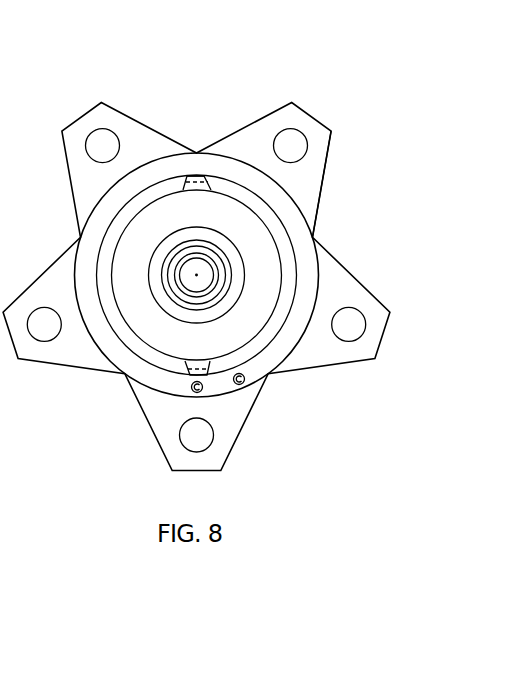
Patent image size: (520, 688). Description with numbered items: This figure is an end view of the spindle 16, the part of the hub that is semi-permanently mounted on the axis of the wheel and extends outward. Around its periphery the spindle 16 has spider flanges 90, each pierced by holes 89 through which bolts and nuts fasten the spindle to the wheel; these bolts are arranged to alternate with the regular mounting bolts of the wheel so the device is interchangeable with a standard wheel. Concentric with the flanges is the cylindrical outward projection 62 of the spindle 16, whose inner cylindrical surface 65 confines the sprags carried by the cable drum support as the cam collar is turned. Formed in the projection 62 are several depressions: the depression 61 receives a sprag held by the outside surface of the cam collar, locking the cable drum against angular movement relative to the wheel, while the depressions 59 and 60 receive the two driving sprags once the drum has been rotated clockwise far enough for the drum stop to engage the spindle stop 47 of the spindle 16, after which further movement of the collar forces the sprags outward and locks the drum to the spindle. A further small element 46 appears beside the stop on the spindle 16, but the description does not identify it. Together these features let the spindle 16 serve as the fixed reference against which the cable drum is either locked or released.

The spindle 16 is at (310, 110).
The holes 89 is at (102, 140).
The spider flanges 90 is at (325, 173).
The cylindrical outward projection 62 is at (282, 245).
The inner cylindrical surface 65 is at (130, 250).
The depression 59 is at (208, 83).
The depression 60 is at (195, 176).
The depression 61 is at (250, 411).
The screw 46 is at (192, 390).
The spindle stop 47 is at (244, 381).